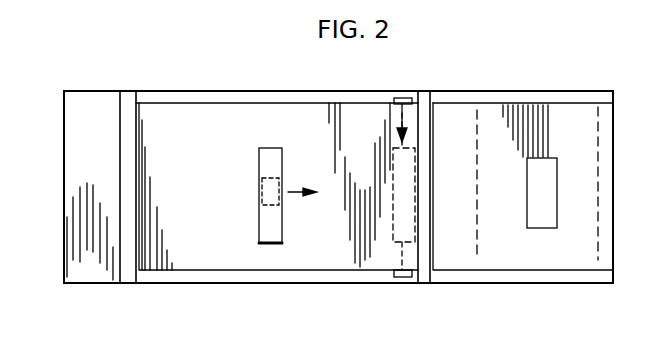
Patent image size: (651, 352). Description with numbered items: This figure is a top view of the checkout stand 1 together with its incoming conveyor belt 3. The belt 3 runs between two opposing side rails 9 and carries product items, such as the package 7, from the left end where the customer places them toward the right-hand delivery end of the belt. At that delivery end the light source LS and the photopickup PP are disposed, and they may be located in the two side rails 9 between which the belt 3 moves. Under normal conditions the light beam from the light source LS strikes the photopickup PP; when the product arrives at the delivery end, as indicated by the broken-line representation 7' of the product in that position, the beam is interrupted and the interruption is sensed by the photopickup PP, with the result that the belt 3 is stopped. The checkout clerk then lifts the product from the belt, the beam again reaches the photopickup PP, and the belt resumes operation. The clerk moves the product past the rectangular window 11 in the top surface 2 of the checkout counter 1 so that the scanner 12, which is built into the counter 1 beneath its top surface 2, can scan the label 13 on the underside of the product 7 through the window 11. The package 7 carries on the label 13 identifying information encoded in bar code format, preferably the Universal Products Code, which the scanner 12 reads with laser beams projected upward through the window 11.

The checkout stand 1 is at (64, 199).
The top surface 2 is at (567, 112).
The incoming conveyor belt 3 is at (188, 150).
The package 7 is at (288, 195).
The broken-line representation of the product 7' is at (386, 187).
The side rails 9 is at (302, 97).
The rectangular window 11 is at (547, 200).
The scanner 12 is at (597, 250).
The label 13 is at (263, 185).
The light source LS is at (398, 97).
The photopickup PP is at (398, 278).